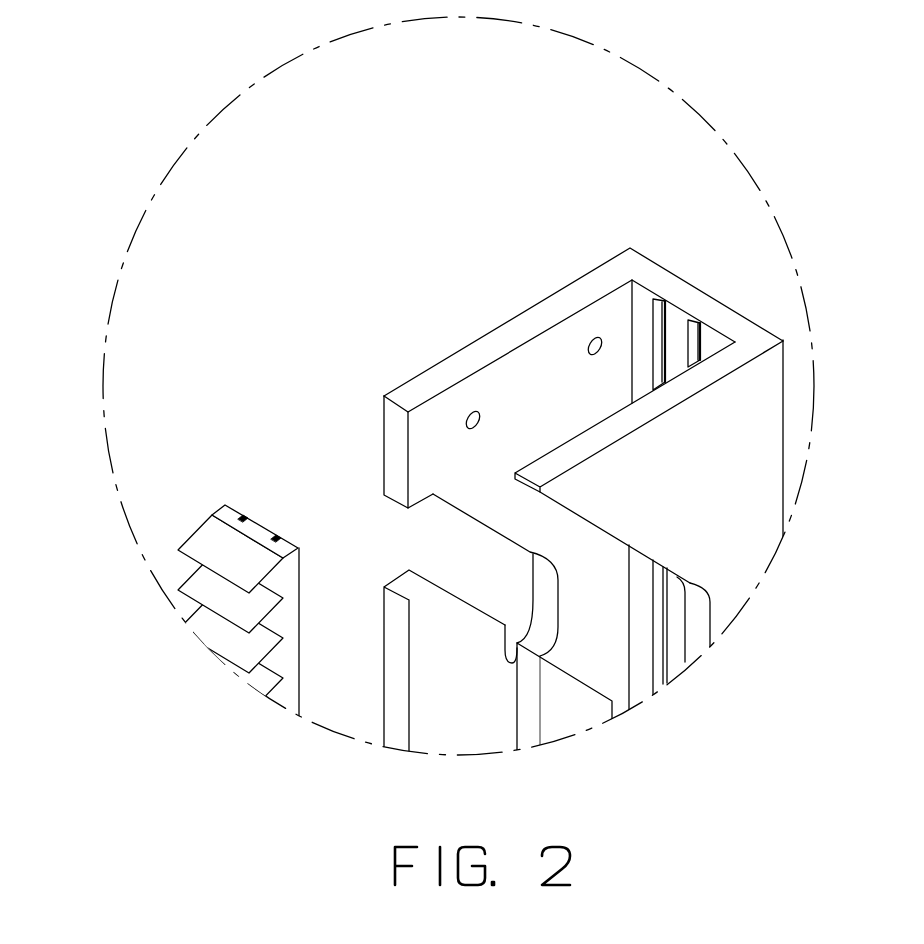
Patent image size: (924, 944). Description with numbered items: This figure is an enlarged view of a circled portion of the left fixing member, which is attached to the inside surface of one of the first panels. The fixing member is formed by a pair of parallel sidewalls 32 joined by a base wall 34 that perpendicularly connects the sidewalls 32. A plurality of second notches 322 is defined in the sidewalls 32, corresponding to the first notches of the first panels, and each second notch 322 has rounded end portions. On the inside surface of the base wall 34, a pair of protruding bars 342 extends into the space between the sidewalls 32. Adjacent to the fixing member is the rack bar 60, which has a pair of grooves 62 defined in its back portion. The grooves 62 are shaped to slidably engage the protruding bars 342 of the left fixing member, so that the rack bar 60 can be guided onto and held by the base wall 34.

The sidewall 32 is at (742, 468).
The base wall 34 is at (718, 317).
The protruding bar 342 is at (663, 300).
The second notch 322 is at (452, 557).
The rack bar 60 is at (205, 549).
The groove 62 is at (243, 518).